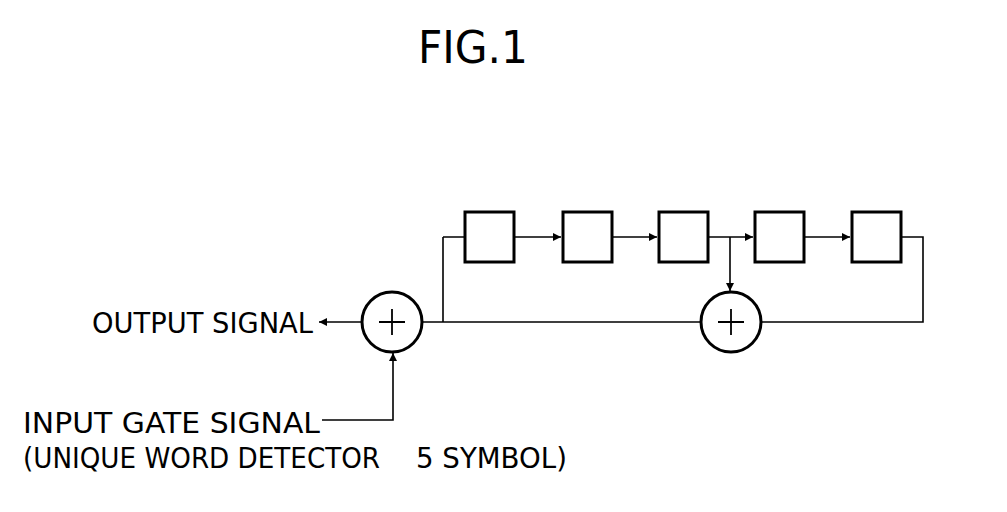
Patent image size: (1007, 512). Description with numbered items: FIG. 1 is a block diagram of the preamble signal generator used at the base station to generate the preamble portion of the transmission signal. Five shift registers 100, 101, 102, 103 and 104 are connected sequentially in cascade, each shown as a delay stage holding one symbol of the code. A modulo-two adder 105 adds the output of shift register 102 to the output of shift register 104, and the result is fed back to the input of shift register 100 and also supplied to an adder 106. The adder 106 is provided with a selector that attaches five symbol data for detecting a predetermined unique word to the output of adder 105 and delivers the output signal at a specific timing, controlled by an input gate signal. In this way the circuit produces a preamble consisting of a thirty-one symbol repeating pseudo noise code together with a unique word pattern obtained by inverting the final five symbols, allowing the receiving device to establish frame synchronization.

The shift register 100 is at (480, 212).
The shift register 101 is at (577, 212).
The shift register 102 is at (672, 212).
The shift register 103 is at (768, 212).
The shift register 104 is at (863, 212).
The mod 2 adder 105 is at (752, 345).
The adder with selector 106 is at (387, 292).